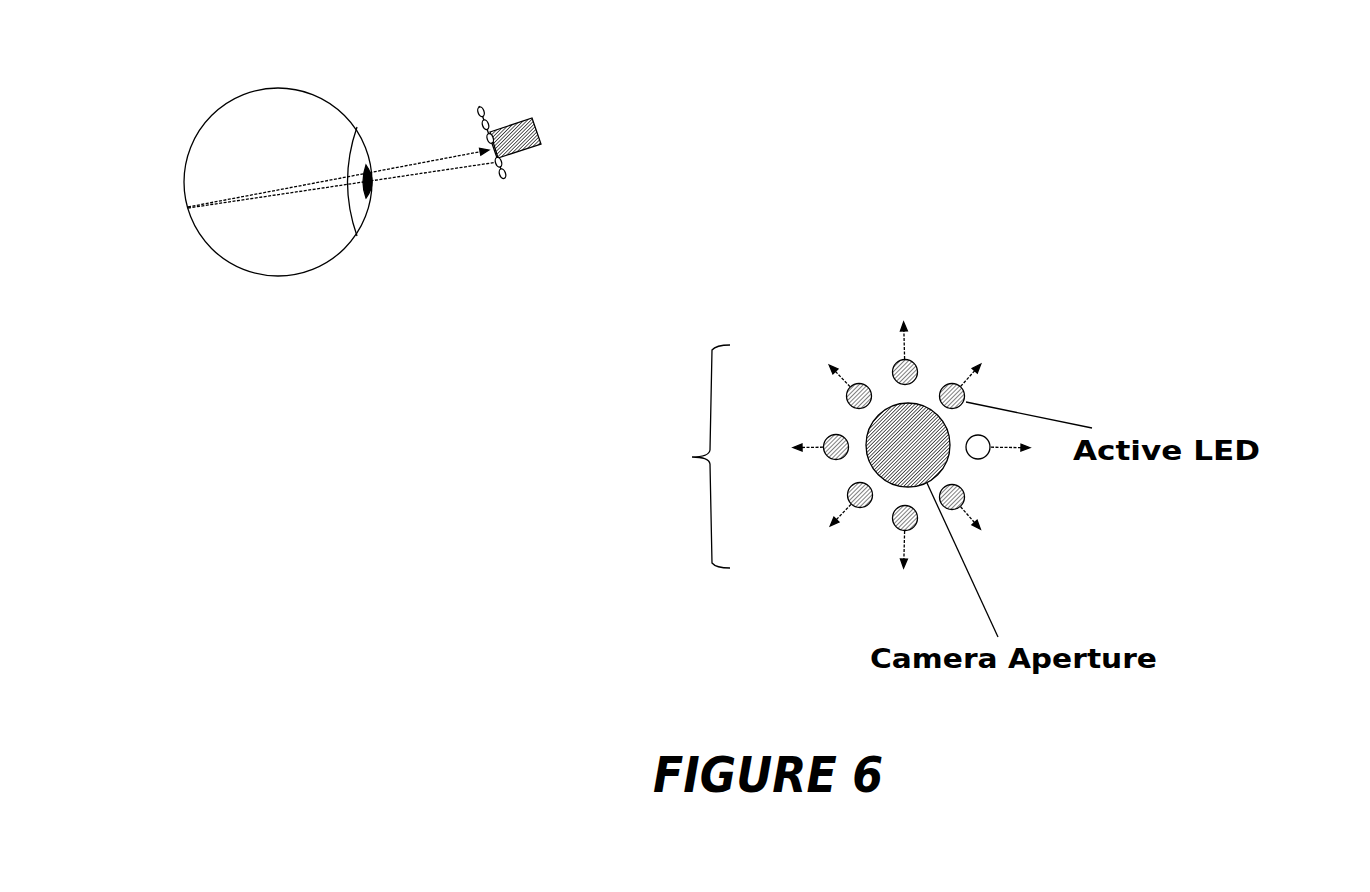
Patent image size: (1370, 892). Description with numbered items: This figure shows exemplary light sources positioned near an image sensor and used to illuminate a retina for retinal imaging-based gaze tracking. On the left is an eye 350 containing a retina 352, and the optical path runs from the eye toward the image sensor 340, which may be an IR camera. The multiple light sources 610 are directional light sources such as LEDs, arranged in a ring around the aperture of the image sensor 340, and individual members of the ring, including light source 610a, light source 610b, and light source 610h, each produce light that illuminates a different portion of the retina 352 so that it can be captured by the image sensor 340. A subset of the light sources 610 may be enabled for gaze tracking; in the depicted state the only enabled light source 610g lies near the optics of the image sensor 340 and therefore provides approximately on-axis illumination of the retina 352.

The eye 350 is at (350, 122).
The retina 352 is at (230, 189).
The image sensor 340 is at (540, 143).
The multiple light sources 610 is at (513, 195).
The light source 610a is at (858, 384).
The light source 610b is at (825, 439).
The enabled light source 610g is at (1142, 449).
The light source 610h is at (913, 361).